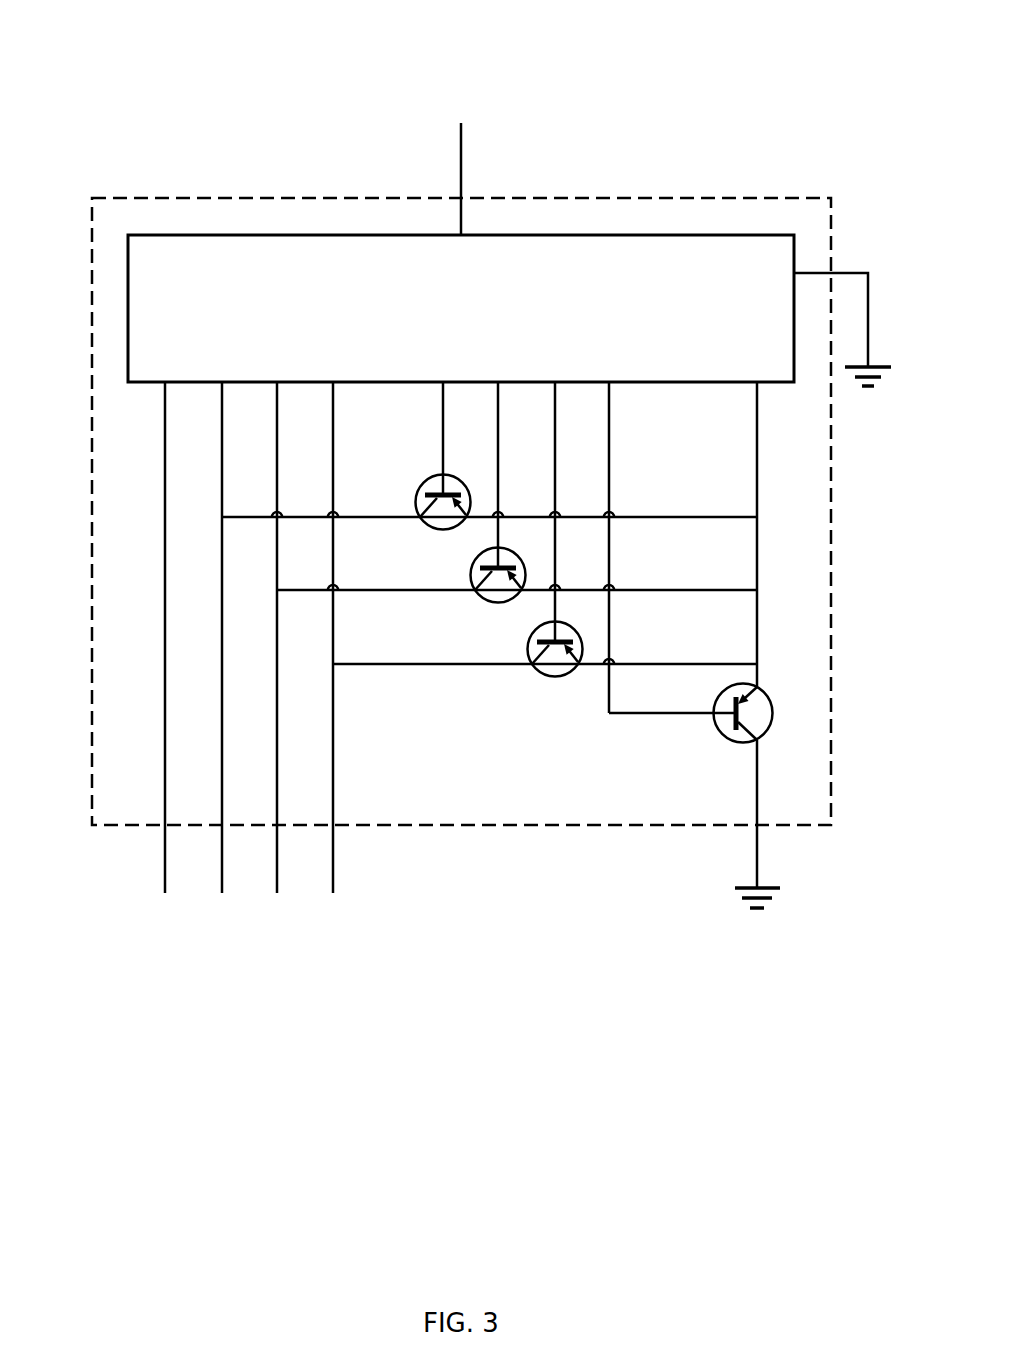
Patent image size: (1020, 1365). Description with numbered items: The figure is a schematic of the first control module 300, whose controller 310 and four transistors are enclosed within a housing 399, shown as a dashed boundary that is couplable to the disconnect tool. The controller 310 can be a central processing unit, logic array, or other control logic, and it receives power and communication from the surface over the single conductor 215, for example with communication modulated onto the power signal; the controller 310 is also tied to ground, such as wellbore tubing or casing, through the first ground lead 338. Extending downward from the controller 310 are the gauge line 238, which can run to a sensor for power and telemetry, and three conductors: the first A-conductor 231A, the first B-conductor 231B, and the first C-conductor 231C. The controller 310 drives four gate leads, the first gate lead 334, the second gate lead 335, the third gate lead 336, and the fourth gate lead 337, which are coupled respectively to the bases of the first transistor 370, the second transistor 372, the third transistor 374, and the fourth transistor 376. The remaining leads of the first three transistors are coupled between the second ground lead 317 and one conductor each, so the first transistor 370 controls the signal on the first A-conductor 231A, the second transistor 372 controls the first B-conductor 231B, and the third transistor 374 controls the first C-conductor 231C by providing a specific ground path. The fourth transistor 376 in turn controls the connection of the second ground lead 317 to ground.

The first control module 300 is at (187, 43).
The housing 399 is at (763, 198).
The controller 310 is at (461, 308).
The single conductor 215 is at (461, 152).
The first ground lead 338 is at (868, 310).
The gauge line 238 is at (165, 494).
The first A-conductor 231A is at (222, 729).
The first B-conductor 231B is at (277, 732).
The first C-conductor 231C is at (333, 806).
The first gate lead 334 is at (443, 415).
The second gate lead 335 is at (498, 465).
The third gate lead 336 is at (609, 430).
The fourth gate lead 337 is at (609, 484).
The second ground lead 317 is at (757, 493).
The first transistor 370 is at (443, 523).
The second transistor 372 is at (498, 596).
The third transistor 374 is at (555, 669).
The fourth transistor 376 is at (716, 796).